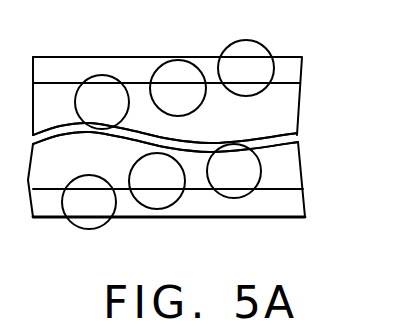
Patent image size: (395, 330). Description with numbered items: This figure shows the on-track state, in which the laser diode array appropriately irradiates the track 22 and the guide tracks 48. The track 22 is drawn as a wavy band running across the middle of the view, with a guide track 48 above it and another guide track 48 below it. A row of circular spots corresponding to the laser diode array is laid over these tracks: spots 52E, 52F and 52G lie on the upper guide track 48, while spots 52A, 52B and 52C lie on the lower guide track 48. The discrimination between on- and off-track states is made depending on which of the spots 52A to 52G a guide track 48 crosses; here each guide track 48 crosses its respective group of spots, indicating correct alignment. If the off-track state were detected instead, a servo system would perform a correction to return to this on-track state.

The guide track 48 is at (292, 67).
The track 22 is at (297, 122).
The spot 52A is at (67, 224).
The spot 52B is at (152, 211).
The spot 52C is at (233, 196).
The spot 52E is at (98, 76).
The spot 52F is at (176, 60).
The spot 52G is at (247, 40).